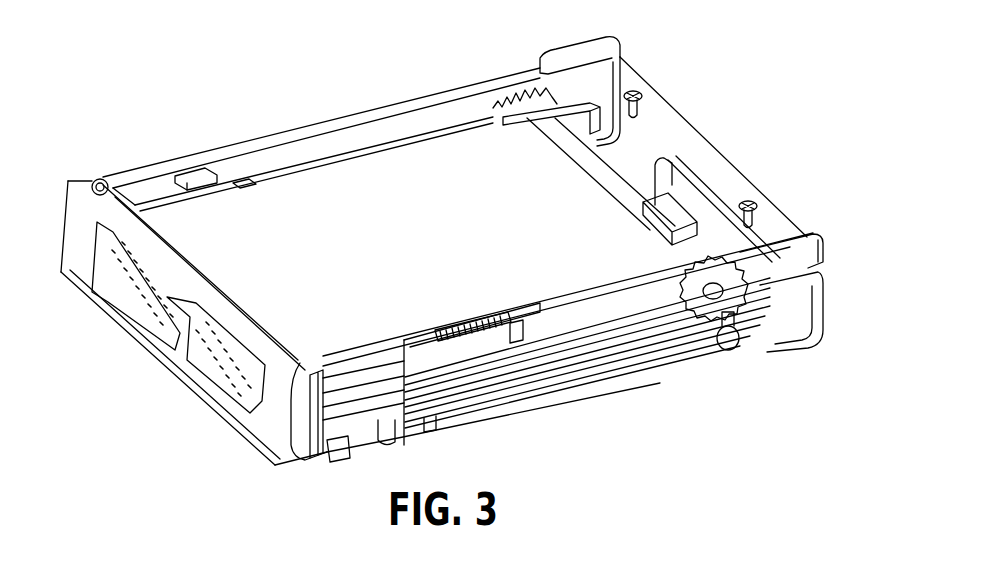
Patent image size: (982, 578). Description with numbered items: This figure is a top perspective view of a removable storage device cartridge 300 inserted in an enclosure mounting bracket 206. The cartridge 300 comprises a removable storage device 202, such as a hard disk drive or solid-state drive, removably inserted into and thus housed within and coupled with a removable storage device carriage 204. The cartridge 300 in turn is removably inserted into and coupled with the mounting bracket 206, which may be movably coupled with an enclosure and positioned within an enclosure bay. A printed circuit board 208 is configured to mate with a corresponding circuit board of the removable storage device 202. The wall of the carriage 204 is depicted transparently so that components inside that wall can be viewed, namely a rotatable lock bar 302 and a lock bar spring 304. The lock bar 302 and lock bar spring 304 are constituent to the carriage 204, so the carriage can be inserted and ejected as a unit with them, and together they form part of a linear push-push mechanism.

The removable storage device 202 is at (170, 343).
The removable storage device carriage 204 is at (680, 367).
The enclosure mounting bracket 206 is at (332, 121).
The printed circuit board 208 is at (673, 183).
The removable storage device cartridge 300 is at (229, 240).
The rotatable lock bar 302 is at (560, 407).
The lock bar spring 304 is at (468, 320).